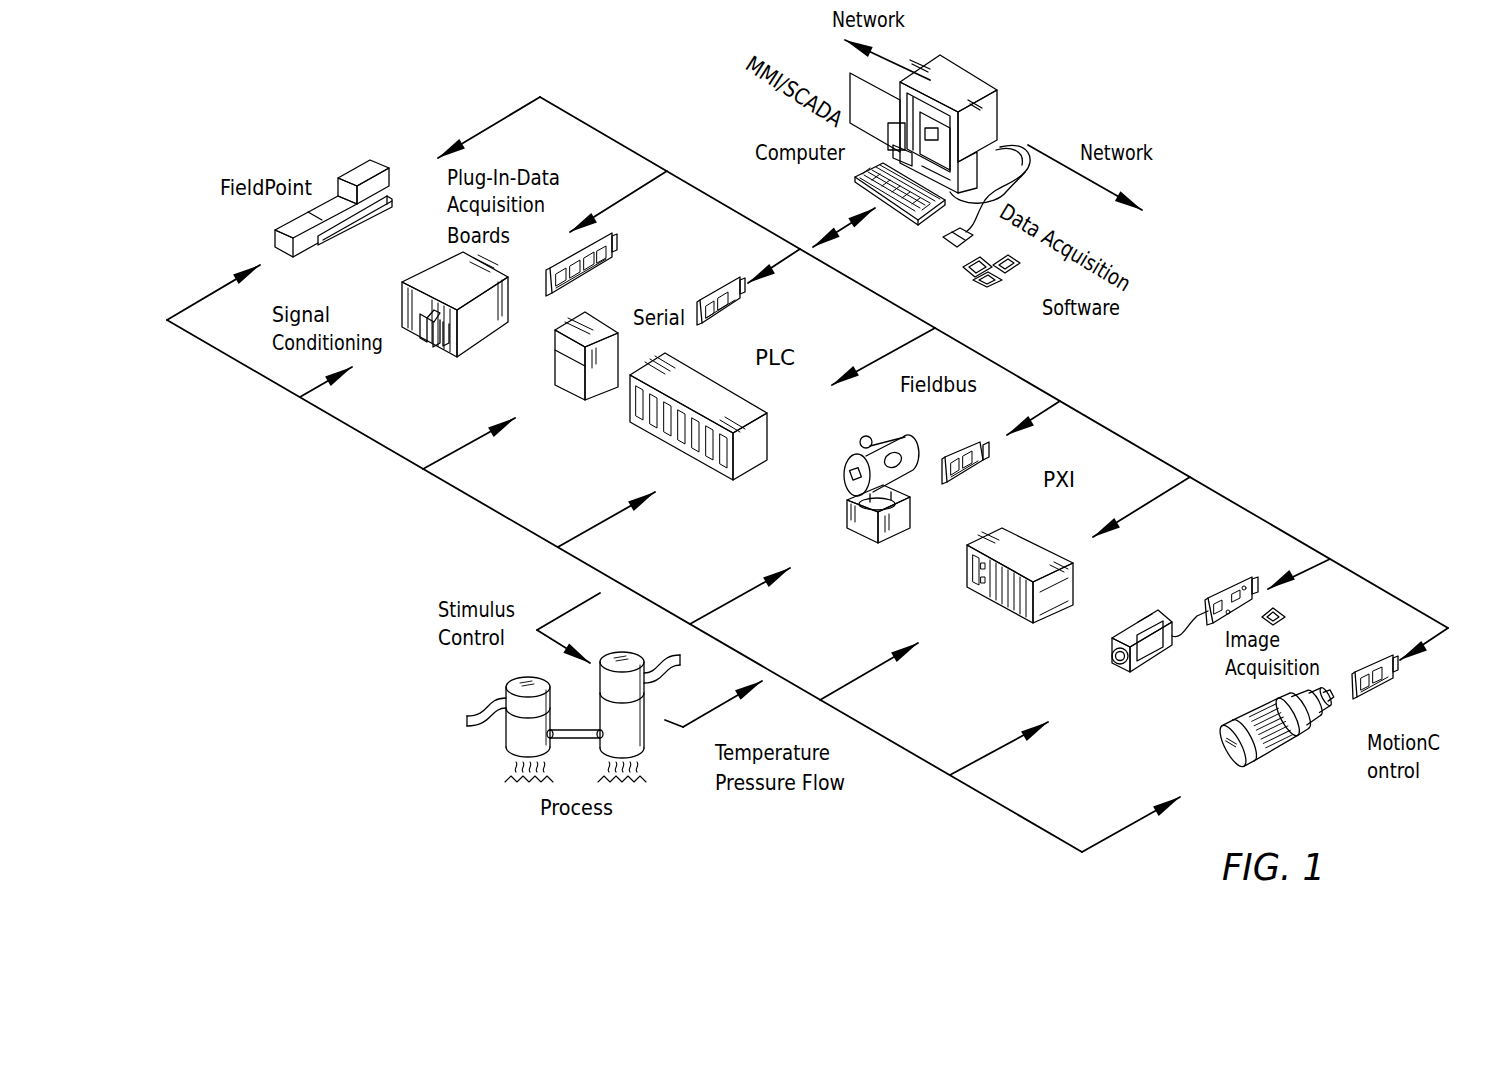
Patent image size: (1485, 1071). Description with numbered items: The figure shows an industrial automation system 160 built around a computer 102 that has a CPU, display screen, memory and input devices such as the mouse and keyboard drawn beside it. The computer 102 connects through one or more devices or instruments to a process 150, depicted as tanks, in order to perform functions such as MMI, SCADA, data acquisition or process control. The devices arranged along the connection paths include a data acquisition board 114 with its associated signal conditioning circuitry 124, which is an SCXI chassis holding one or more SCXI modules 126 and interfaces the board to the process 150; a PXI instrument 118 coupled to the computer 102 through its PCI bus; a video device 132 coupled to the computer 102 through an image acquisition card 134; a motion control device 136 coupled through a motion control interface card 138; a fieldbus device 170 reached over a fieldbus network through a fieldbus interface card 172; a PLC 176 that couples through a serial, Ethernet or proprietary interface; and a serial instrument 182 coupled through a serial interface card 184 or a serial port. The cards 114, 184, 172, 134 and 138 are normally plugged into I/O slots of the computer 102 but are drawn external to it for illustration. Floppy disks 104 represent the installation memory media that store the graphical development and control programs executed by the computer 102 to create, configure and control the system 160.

The computer 102 is at (947, 145).
The floppy disks 104 is at (1014, 304).
The data acquisition board 114 is at (612, 250).
The PXI instrument 118 is at (1022, 560).
The signal conditioning circuitry 124 is at (432, 314).
The SCXI modules 126 is at (457, 346).
The video device 132 is at (1147, 632).
The image acquisition card 134 is at (1217, 591).
The motion control device 136 is at (1279, 729).
The motion control interface card 138 is at (1403, 687).
The process 150 is at (530, 717).
The industrial automation system 160 is at (1318, 147).
The fieldbus device 170 is at (867, 506).
The fieldbus interface card 172 is at (943, 443).
The PLC 176 is at (710, 416).
The serial instrument 182 is at (554, 361).
The serial interface card 184 is at (695, 290).